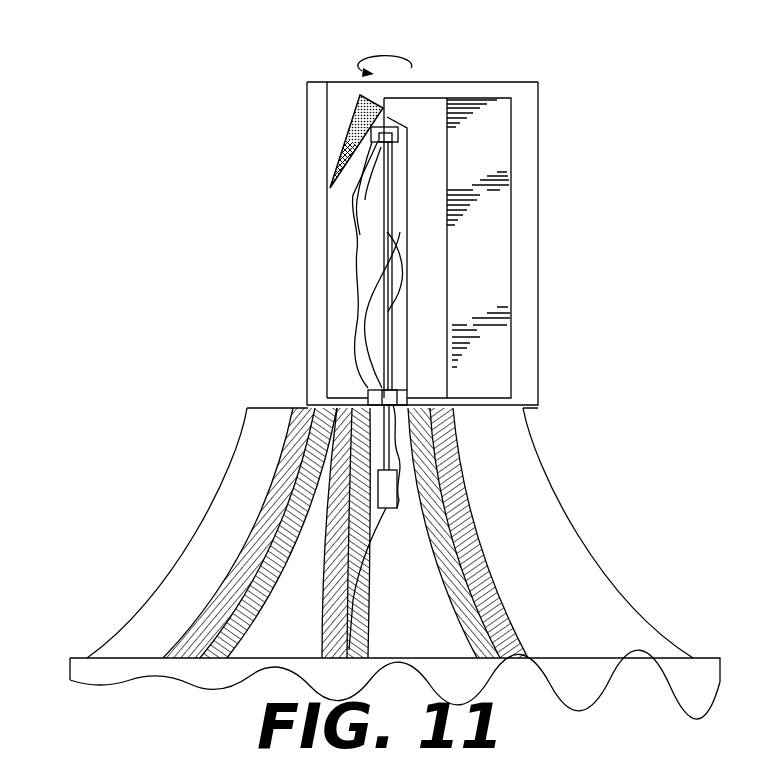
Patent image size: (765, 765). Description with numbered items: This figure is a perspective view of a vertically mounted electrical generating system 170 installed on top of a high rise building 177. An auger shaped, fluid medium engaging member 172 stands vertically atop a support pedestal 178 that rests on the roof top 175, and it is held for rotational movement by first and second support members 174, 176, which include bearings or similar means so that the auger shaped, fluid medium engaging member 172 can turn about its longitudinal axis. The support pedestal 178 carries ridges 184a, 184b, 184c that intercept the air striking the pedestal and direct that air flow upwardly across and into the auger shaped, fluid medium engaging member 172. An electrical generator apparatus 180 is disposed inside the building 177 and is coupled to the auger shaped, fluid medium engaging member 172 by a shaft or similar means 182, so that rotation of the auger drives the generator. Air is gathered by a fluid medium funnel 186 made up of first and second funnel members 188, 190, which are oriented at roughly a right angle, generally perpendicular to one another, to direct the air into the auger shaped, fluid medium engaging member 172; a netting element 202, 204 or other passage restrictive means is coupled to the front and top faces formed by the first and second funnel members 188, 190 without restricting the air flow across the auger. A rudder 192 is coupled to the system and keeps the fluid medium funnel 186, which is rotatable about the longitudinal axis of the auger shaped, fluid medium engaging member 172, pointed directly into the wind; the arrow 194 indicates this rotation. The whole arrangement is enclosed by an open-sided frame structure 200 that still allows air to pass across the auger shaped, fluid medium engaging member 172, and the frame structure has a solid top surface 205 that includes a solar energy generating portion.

The vertically mounted electrical generating system 170 is at (228, 38).
The auger shaped fluid medium engaging member 172 is at (372, 272).
The first support member 174 is at (360, 133).
The roof top 175 is at (85, 657).
The second support member 176 is at (368, 390).
The building 177 is at (68, 658).
The support pedestal 178 is at (240, 440).
The electrical generator apparatus 180 is at (397, 493).
The shaft 182 is at (400, 458).
The ridge 184a is at (268, 543).
The ridge 184b is at (354, 606).
The ridge 184c is at (477, 602).
The fluid medium funnel 186 is at (344, 72).
The first funnel member 188 is at (363, 143).
The second funnel member 190 is at (345, 202).
The rudder 192 is at (512, 197).
The rotation arrow 194 is at (412, 66).
The open-sided frame structure 200 is at (538, 357).
The netting element 202 is at (357, 165).
The netting element 204 is at (362, 98).
The solid top surface 205 is at (538, 82).